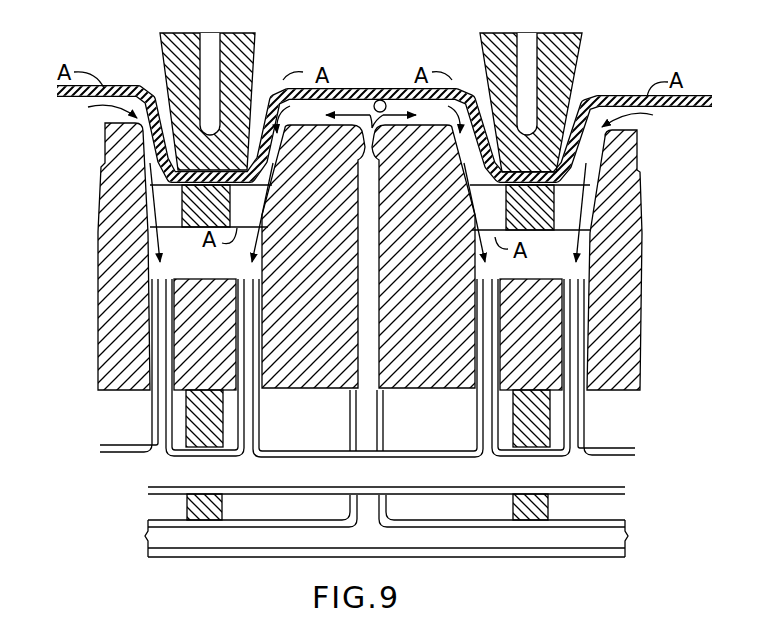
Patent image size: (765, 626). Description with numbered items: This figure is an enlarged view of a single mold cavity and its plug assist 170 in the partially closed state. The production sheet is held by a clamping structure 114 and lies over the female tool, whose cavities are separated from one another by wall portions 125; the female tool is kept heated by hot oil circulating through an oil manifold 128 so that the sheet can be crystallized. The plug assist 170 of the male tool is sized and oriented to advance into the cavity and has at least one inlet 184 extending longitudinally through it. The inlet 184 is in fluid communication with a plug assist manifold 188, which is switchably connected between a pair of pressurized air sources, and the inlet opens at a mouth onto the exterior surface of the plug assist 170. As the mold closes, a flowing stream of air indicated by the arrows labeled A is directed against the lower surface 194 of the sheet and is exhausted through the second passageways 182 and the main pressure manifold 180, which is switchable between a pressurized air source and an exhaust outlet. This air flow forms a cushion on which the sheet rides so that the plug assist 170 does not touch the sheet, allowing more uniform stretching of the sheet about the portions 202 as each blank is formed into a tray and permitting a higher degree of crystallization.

The clamping structure 114 is at (530, 222).
The wall portions 125 is at (183, 167).
The oil manifold 128 is at (208, 50).
The plug assist 170 is at (108, 247).
The main pressure manifold 180 is at (386, 479).
The second passageways 182 is at (248, 277).
The inlet 184 is at (368, 317).
The plug assist manifold 188 is at (386, 525).
The lower surface 194 is at (385, 100).
The portions 202 is at (379, 105).